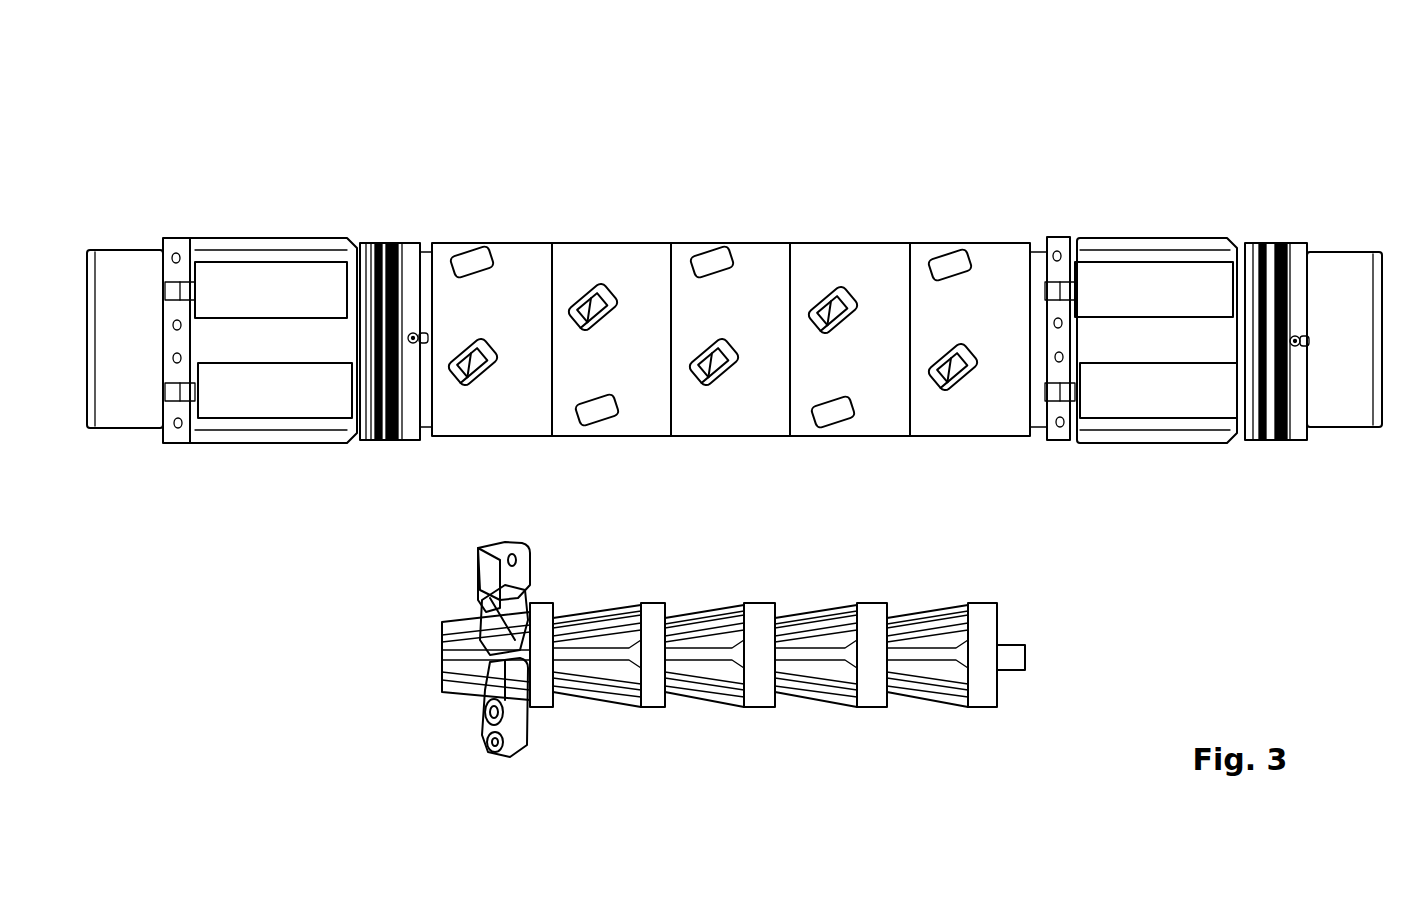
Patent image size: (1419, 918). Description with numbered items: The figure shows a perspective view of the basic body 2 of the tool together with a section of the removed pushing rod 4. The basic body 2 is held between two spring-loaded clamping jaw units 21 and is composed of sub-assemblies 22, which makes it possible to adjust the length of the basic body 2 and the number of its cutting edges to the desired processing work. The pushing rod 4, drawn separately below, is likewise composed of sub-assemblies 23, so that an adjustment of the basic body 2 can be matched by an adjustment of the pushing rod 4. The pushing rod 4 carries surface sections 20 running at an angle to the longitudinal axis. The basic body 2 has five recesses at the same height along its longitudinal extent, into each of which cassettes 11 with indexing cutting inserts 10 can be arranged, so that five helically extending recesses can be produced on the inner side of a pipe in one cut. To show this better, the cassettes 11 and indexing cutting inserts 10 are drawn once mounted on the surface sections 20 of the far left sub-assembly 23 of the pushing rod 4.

The basic body 2 is at (725, 190).
The pushing rod 4 is at (800, 735).
The indexing cutting inserts 10 is at (485, 543).
The cassettes 11 is at (515, 547).
The surface sections 20 is at (530, 617).
The clamping jaw units 21 is at (239, 328).
The sub-assemblies 22 is at (503, 275).
The sub-assemblies 23 is at (542, 703).